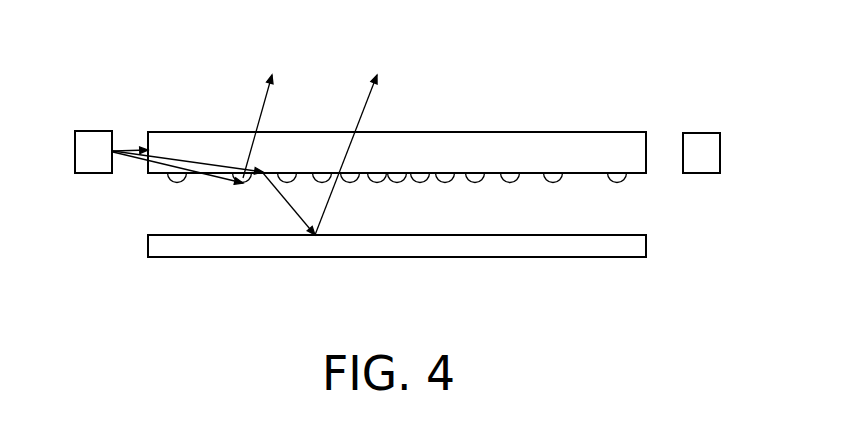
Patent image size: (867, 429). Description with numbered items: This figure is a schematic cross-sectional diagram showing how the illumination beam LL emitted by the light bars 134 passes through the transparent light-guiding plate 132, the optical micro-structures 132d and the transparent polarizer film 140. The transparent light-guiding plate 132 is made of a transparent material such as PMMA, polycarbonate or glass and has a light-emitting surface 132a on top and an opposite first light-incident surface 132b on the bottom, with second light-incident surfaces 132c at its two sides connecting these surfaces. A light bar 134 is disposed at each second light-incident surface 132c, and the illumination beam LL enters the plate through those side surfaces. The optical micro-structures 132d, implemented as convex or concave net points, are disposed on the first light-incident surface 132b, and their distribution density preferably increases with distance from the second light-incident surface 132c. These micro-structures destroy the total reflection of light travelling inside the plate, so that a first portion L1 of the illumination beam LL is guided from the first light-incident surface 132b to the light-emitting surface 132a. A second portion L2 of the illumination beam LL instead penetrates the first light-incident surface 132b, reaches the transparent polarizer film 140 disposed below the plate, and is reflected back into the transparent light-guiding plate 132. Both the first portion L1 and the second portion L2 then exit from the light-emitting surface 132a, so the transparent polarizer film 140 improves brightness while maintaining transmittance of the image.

The transparent light-guiding plate 132 is at (588, 148).
The light-emitting surface 132a is at (513, 132).
The first light-incident surface 132b is at (586, 177).
The second light-incident surface 132c is at (147, 150).
The optical micro-structures 132d is at (620, 180).
The light bar 134 is at (93, 147).
The transparent polarizer film 140 is at (588, 248).
The illumination beam LL is at (131, 152).
The first portion of the illumination beam L1 is at (266, 105).
The second portion of the illumination beam L2 is at (368, 103).